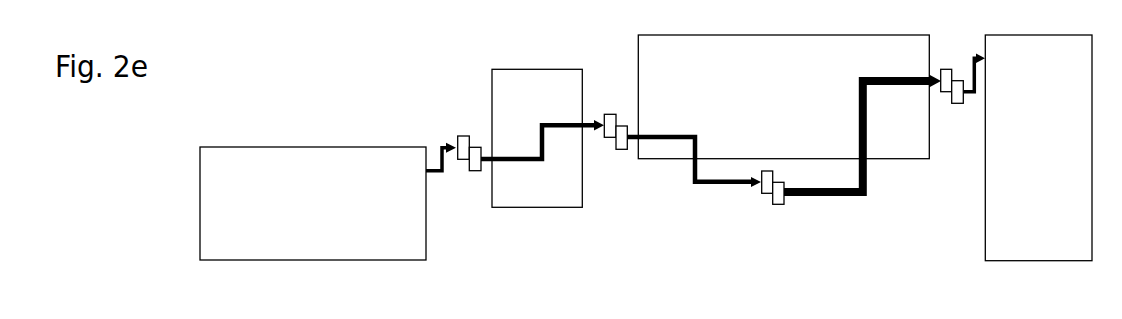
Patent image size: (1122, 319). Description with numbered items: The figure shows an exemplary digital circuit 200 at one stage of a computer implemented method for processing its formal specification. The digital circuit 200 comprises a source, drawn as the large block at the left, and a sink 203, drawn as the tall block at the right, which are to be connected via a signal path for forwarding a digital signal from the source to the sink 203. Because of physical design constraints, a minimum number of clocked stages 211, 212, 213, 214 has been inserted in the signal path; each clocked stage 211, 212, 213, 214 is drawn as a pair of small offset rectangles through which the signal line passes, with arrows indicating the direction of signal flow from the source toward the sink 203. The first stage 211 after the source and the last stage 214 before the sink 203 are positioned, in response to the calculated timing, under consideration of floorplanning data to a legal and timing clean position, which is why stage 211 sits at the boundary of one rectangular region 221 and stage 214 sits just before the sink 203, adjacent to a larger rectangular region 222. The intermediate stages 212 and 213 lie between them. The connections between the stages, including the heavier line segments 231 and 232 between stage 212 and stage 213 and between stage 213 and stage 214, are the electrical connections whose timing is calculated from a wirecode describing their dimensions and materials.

The digital circuit 200 is at (152, 224).
The sink 203 is at (1038, 148).
The first clocked stage 211 is at (475, 171).
The clocked stage 212 is at (622, 149).
The clocked stage 213 is at (777, 204).
The last clocked stage 214 is at (957, 103).
The first optical module 221 is at (492, 81).
The second optical module 222 is at (637, 47).
The first optical fiber 231 is at (716, 183).
The second optical fiber 232 is at (840, 195).